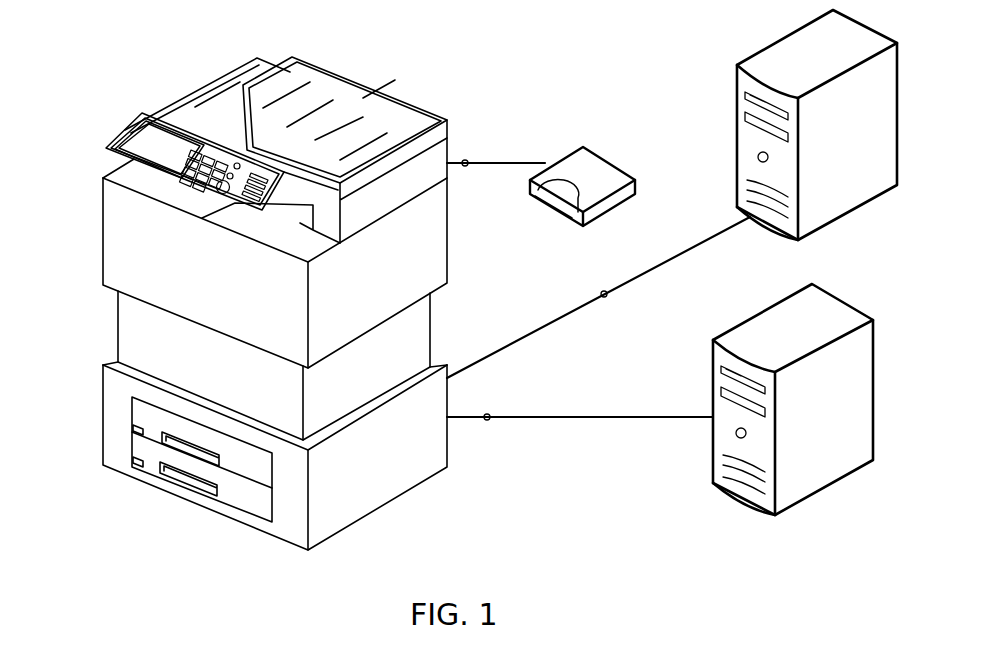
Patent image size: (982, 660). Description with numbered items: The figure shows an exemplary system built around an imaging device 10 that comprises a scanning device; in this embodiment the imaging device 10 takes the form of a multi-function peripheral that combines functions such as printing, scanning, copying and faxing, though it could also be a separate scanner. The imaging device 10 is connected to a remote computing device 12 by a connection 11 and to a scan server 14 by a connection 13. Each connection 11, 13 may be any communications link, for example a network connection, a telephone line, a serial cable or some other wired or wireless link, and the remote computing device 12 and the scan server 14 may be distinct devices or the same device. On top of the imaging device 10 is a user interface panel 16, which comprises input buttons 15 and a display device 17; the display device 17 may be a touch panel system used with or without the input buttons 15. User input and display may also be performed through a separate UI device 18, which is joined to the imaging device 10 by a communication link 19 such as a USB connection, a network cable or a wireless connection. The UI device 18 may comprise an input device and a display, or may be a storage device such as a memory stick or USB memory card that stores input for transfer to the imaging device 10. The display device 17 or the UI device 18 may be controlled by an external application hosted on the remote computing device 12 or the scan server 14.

The imaging device 10 is at (360, 500).
The connection 11 is at (604, 298).
The remote computing device 12 is at (875, 178).
The connection 13 is at (487, 421).
The scan server 14 is at (792, 480).
The input buttons 15 is at (222, 192).
The user interface panel 16 is at (240, 190).
The display device 17 is at (138, 138).
The UI device 18 is at (637, 183).
The communication link 19 is at (465, 167).